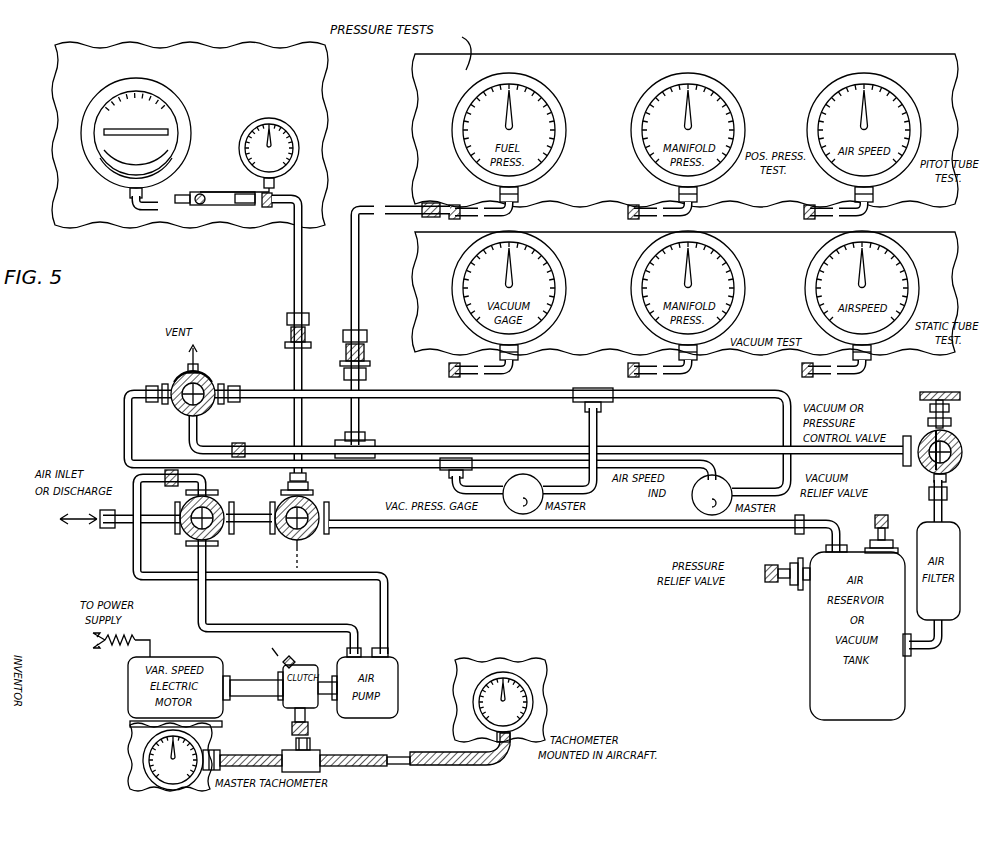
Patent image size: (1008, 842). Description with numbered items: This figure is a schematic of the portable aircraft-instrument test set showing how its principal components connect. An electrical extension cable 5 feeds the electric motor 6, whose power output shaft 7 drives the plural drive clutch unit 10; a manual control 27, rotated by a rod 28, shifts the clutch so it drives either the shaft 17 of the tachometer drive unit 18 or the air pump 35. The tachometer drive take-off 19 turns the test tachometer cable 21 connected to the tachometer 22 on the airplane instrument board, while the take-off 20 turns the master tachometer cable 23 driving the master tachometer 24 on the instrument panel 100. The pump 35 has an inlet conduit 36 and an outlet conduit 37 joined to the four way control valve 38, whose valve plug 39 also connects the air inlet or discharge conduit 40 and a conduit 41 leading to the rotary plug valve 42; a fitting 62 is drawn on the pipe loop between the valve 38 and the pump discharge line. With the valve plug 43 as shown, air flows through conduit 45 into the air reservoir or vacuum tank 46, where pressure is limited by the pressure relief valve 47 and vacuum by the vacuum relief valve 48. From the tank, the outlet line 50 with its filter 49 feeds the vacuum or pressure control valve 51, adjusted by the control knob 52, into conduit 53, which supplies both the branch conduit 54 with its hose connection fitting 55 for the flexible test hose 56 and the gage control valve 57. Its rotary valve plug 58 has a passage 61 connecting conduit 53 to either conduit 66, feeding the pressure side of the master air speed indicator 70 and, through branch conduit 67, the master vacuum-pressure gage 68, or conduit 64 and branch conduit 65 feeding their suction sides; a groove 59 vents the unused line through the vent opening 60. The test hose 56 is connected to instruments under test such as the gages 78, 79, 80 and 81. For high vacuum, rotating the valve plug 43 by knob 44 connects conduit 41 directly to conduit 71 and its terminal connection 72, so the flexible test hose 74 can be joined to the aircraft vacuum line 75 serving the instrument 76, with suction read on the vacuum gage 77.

The electrical extension cable 5 is at (93, 641).
The electric motor 6 is at (220, 710).
The power output shaft 7 is at (250, 696).
The plural drive clutch unit 10 is at (286, 708).
The shaft 17 is at (308, 724).
The tachometer drive unit 18 is at (310, 748).
The tachometer drive take-off 19 is at (343, 754).
The tachometer drive take-off 20 is at (283, 770).
The test tachometer cable 21 is at (404, 764).
The tachometer 22 is at (535, 692).
The master tachometer cable 23 is at (250, 754).
The master tachometer 24 is at (215, 752).
The manual control 27 is at (289, 660).
The rod 28 is at (278, 657).
The air pump 35 is at (398, 682).
The inlet conduit 36 is at (274, 623).
The outlet conduit 37 is at (390, 606).
The four way control valve 38 is at (218, 538).
The valve plug 39 is at (233, 505).
The air inlet or discharge conduit 40 is at (120, 530).
The conduit 41 is at (256, 532).
The rotary plug valve 42 is at (308, 542).
The valve plug 43 is at (324, 504).
The knob 44 is at (300, 566).
The conduit 45 is at (388, 528).
The air reservoir or vacuum tank 46 is at (812, 675).
The pressure relief valve 47 is at (791, 585).
The vacuum relief valve 48 is at (874, 518).
The filter 49 is at (962, 566).
The outlet line 50 is at (948, 512).
The vacuum or pressure control valve 51 is at (964, 463).
The control knob 52 is at (965, 400).
The conduit 53 is at (244, 446).
The branch conduit 54 is at (355, 430).
The hose connection fitting 55 is at (366, 353).
The flexible test hose 56 is at (357, 306).
The gage control valve 57 is at (228, 384).
The rotary valve plug 58 is at (192, 366).
The groove 59 is at (214, 382).
The vent opening 60 is at (203, 372).
The passage 61 is at (164, 384).
The pipe union 62 is at (210, 482).
The conduit 64 is at (248, 400).
The branch conduit 65 is at (600, 430).
The conduit 66 is at (168, 460).
The branch conduit 67 is at (450, 488).
The master vacuum-pressure gage 68 is at (542, 492).
The master air speed indicator 70 is at (704, 506).
The conduit 71 is at (310, 477).
The terminal connection 72 is at (306, 337).
The flexible test hose 74 is at (303, 268).
The vacuum line 75 is at (217, 206).
The instrument 76 is at (108, 170).
The vacuum gage 77 is at (284, 126).
The instrument to be tested 78 is at (544, 106).
The instrument to be tested 79 is at (732, 114).
The instrument to be tested 80 is at (910, 110).
The instrument to be tested 81 is at (558, 264).
The instrument panel 100 is at (136, 762).